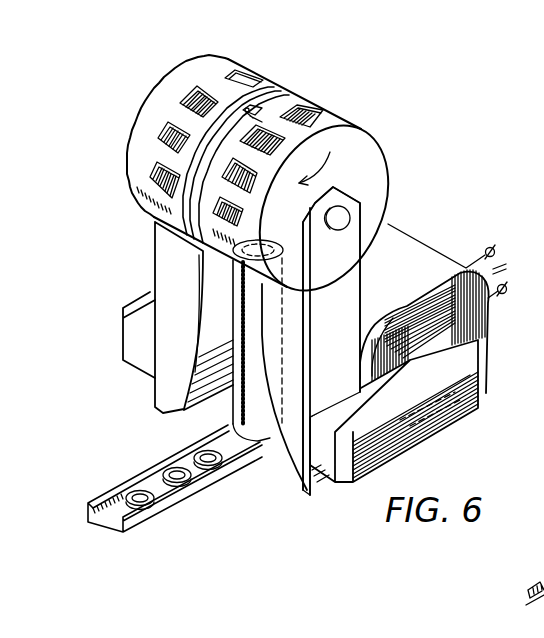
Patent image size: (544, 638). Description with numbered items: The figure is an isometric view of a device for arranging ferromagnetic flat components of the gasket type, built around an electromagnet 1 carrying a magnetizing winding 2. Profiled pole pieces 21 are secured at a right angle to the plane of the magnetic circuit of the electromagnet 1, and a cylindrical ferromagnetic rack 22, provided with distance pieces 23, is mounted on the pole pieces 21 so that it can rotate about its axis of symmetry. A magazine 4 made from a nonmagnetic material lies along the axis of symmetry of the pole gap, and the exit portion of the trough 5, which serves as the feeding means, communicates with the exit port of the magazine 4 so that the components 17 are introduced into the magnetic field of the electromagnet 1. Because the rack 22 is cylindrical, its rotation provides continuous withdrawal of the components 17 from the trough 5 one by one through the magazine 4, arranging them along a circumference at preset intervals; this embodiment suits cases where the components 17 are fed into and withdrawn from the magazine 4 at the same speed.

The electromagnet 1 is at (489, 394).
The magnetizing winding 2 is at (488, 331).
The magazine 4 is at (280, 452).
The trough 5 is at (164, 504).
The components 17 is at (134, 490).
The profiled pole pieces 21 is at (163, 395).
The cylindrical ferromagnetic racks 22 is at (218, 67).
The distance pieces 23 is at (258, 118).